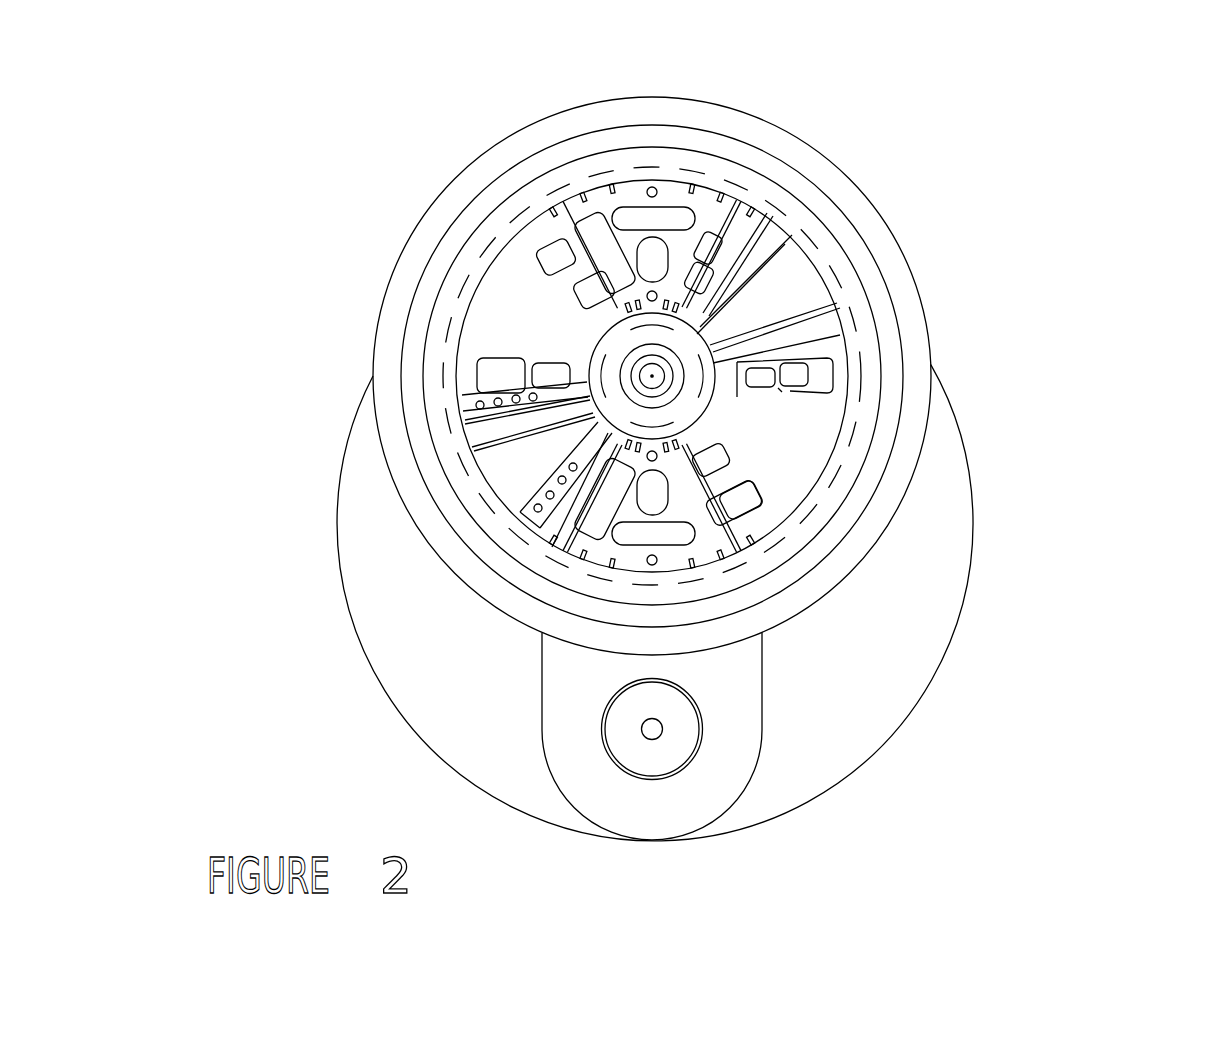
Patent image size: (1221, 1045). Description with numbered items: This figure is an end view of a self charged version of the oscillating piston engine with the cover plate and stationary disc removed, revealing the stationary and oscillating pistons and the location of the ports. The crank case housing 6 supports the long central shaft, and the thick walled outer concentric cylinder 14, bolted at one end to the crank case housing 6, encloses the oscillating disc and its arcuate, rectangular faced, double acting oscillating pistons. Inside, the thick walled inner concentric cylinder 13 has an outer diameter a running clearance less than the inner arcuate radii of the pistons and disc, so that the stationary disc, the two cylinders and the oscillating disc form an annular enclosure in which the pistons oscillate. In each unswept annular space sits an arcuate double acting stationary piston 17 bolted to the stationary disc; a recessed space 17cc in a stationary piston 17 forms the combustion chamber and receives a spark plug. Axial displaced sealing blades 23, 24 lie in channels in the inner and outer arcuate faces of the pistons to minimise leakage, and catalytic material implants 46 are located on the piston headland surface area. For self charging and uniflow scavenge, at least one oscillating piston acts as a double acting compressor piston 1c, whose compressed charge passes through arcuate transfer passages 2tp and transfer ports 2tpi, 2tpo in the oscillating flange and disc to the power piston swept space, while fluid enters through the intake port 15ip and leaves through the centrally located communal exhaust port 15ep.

The double acting oscillating compressor piston 1c is at (790, 288).
The transfer passage 2tp is at (777, 472).
The transfer port 2tpi is at (725, 240).
The transfer port 2tpo is at (575, 263).
The crank case housing 6 is at (430, 682).
The inner concentric cylinder 13 is at (695, 405).
The outer concentric cylinder 14 is at (833, 468).
The exit port 15ep is at (493, 380).
The intake port 15ip is at (822, 366).
The stationary piston 17 is at (710, 215).
The combustion chamber recessed space 17cc is at (557, 240).
The axial displaced sealing blade 23 is at (710, 358).
The axial displaced sealing blade 24 is at (600, 185).
The catalytic material implant 46 is at (472, 406).